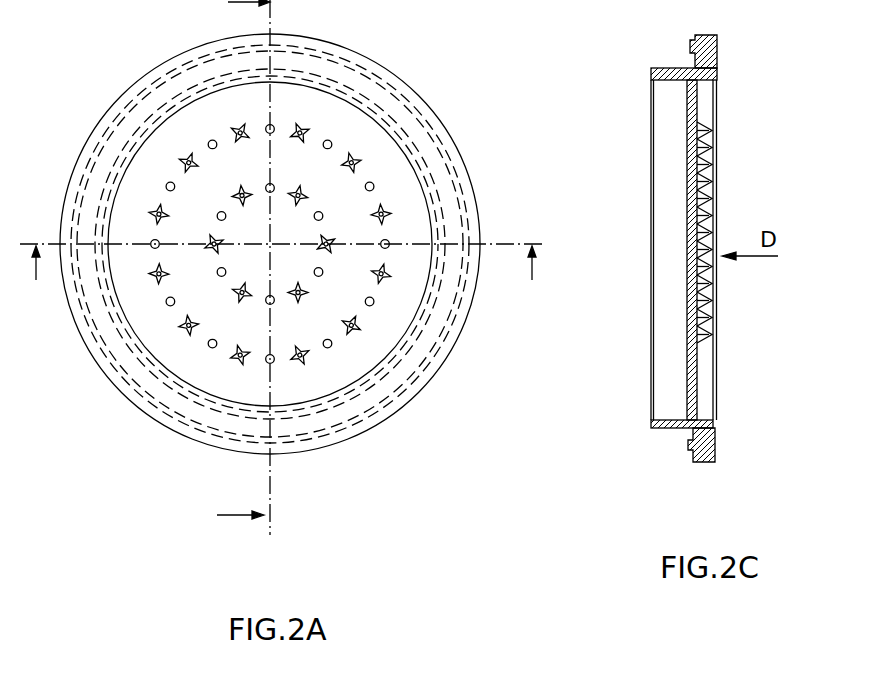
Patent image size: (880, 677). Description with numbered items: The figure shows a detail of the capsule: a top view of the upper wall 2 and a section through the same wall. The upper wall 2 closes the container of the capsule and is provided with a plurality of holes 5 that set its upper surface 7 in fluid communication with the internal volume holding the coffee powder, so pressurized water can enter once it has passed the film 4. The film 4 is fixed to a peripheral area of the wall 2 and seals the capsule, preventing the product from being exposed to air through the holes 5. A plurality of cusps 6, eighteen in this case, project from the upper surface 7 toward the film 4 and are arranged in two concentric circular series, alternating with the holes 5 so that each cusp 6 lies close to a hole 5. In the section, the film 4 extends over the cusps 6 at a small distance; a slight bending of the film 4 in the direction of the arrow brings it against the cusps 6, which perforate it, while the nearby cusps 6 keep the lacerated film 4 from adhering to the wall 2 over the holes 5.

In FIG. 2A, the upper wall 2 is at (72, 146).
In FIG. 2C, the upper wall 2 is at (693, 458).
In FIG. 2C, the film 4 is at (722, 404).
In FIG. 2A, the holes 5 is at (331, 140).
In FIG. 2C, the holes 5 is at (688, 130).
In FIG. 2A, the cusps 6 is at (240, 124).
In FIG. 2C, the cusps 6 is at (699, 162).
In FIG. 2A, the upper surface 7 is at (212, 378).